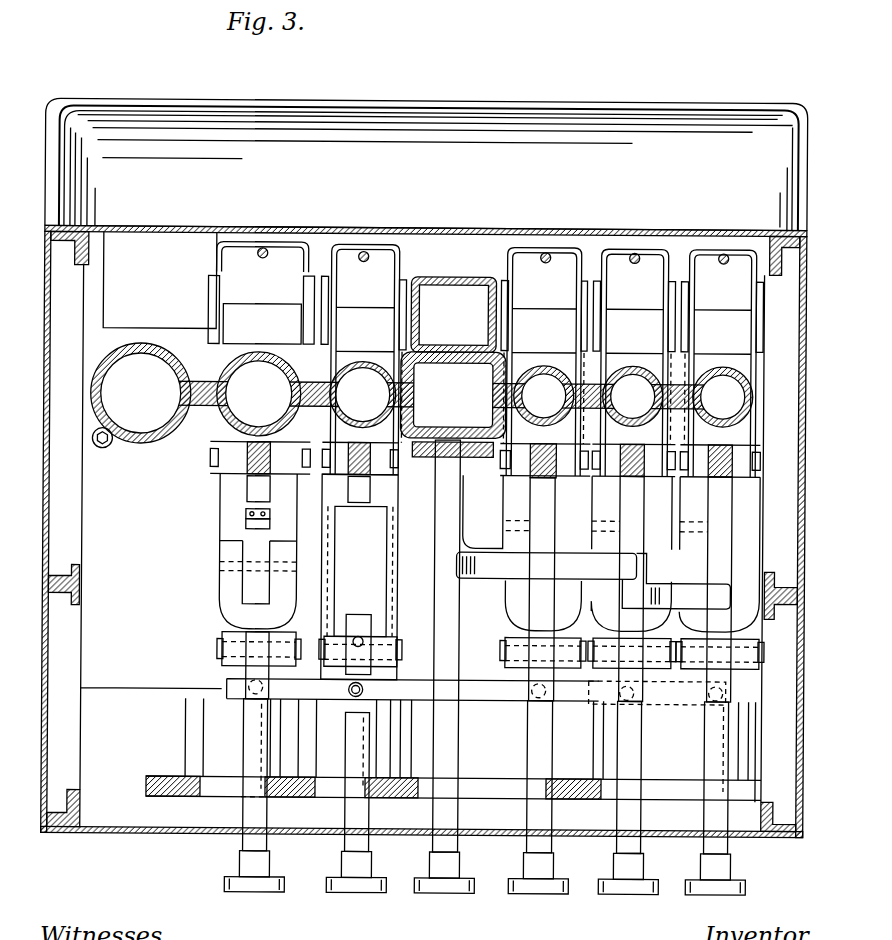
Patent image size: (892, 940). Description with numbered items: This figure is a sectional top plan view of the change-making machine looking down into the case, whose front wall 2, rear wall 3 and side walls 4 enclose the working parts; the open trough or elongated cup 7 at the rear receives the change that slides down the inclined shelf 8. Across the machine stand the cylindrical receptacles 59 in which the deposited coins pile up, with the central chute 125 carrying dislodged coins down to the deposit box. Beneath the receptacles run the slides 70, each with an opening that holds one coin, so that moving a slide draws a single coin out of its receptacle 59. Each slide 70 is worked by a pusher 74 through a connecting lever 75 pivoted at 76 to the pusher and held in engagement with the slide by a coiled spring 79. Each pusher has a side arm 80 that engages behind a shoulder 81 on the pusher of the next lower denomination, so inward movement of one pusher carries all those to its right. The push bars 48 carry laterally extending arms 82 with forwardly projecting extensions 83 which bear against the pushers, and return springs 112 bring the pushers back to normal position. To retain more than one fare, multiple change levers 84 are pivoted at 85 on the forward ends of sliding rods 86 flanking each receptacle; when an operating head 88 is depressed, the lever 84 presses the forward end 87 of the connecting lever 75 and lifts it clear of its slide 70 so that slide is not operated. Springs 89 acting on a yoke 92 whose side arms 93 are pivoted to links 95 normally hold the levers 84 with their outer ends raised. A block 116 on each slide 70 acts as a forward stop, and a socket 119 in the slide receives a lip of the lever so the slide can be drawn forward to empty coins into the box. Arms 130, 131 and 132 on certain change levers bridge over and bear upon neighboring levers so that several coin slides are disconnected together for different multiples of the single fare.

The front wall 2 is at (165, 836).
The rear wall 3 is at (595, 233).
The side walls 4 is at (43, 690).
The open trough or elongated cup 7 is at (480, 100).
The inclined shelf 8 is at (468, 240).
The push bar 48 is at (168, 800).
The cylindrical coin receptacle 59 is at (362, 358).
The slide 70 is at (250, 313).
The pusher 74 is at (378, 594).
The lever 75 is at (220, 594).
The pivot 76 is at (220, 652).
The coiled spring 79 is at (366, 690).
The side arm 80 is at (308, 685).
The shoulder 81 is at (340, 705).
The arm 82 is at (226, 795).
The forwardly projecting extension 83 is at (277, 712).
The multiple change lever 84 is at (270, 496).
The pintle 85 is at (205, 460).
The rods 86 is at (207, 297).
The forward end 87 is at (265, 682).
The operating head 88 is at (518, 893).
The springs 89 is at (361, 262).
The yoke 92 is at (372, 241).
The side arms 93 is at (401, 270).
The links 95 is at (344, 470).
The springs 112 is at (365, 640).
The block 116 is at (270, 518).
The socket 119 is at (265, 522).
The central chute 125 is at (454, 315).
The arm 130 is at (676, 581).
The arm 131 is at (632, 725).
The arm 132 is at (546, 565).